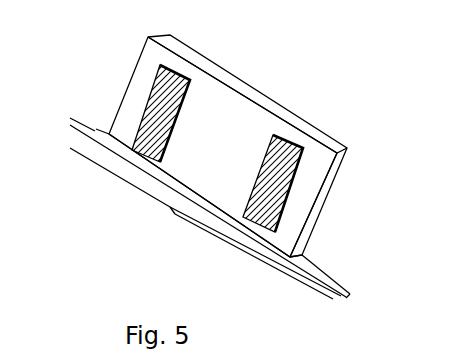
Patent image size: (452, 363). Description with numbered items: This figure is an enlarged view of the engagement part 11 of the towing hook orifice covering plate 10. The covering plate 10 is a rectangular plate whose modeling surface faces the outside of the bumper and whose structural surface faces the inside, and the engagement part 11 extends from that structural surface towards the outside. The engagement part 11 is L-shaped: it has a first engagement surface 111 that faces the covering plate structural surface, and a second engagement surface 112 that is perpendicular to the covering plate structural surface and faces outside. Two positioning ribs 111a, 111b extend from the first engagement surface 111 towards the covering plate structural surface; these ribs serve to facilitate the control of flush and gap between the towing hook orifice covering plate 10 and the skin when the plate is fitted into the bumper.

The towing hook orifice covering plate 10 is at (210, 208).
The engagement part 11 is at (212, 146).
The first engagement surface 111 is at (289, 147).
The positioning rib 111a is at (164, 91).
The positioning rib 111b is at (278, 158).
The second engagement surface 112 is at (259, 203).